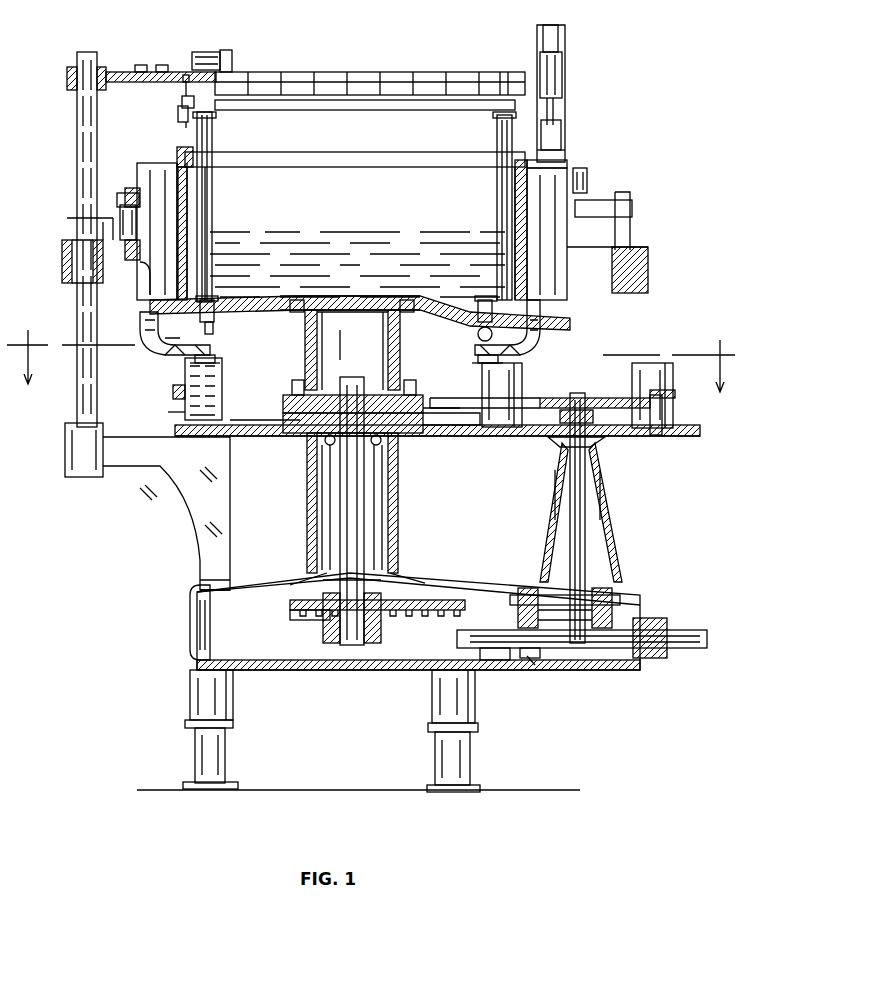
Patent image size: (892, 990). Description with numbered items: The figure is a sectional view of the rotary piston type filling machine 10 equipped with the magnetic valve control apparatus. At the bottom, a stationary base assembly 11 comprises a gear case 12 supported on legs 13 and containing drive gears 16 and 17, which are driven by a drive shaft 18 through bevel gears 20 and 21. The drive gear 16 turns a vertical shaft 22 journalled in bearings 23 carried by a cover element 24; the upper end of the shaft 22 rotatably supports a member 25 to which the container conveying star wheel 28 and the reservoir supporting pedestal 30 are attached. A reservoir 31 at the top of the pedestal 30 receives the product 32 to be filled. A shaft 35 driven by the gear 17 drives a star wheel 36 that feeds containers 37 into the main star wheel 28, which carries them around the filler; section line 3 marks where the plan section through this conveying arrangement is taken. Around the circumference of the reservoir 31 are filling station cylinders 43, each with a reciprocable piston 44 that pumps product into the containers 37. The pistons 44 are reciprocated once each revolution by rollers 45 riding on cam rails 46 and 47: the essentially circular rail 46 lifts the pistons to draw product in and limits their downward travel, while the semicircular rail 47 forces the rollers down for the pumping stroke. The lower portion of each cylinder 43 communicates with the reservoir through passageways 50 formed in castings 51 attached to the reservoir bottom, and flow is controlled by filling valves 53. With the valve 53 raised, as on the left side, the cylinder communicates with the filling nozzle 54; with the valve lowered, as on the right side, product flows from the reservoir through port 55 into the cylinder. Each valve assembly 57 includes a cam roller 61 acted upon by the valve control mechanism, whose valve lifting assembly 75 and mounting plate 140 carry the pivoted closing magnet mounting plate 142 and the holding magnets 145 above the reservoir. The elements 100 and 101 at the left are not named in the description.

The section line 3— 3 is at (371, 352).
The filling machine 10 is at (173, 501).
The stationary base assembly 11 is at (195, 620).
The gear case 12 is at (330, 670).
The legs 13 is at (226, 754).
The drive gear 16 is at (410, 620).
The drive gear 17 is at (540, 612).
The drive shaft 18 is at (688, 632).
The bevel gear 20 is at (537, 660).
The bevel gear 21 is at (485, 662).
The vertical shaft 22 is at (365, 512).
The bearings 23 is at (385, 582).
The cover element 24 is at (307, 493).
The member 25 is at (410, 433).
The container conveying star wheel 28 is at (230, 424).
The reservoir supporting pedestal 30 is at (400, 362).
The reservoir 31 is at (378, 195).
The product 32 is at (392, 280).
The shaft 35 is at (585, 509).
The star wheel 36 is at (612, 399).
The containers 37 is at (185, 383).
The filling station cylinders 43 is at (145, 306).
The reciprocable piston 44 is at (160, 192).
The rollers 45 is at (120, 217).
The cam rail 46 is at (138, 272).
The cam rail 47 is at (130, 188).
The passageways 50 is at (170, 354).
The castings 51 is at (180, 360).
The filling valve 53 is at (220, 320).
The filling nozzle 54 is at (218, 362).
The port 55 is at (478, 346).
The valve assembly 57 is at (208, 242).
The cam roller 61 is at (178, 130).
The valve lifting assembly 75 is at (562, 82).
The post flange 100 is at (74, 72).
The post 101 is at (78, 116).
The mounting plate 140 is at (490, 78).
The closing magnet mounting plate 142 is at (200, 50).
The holding magnets 145 is at (372, 70).